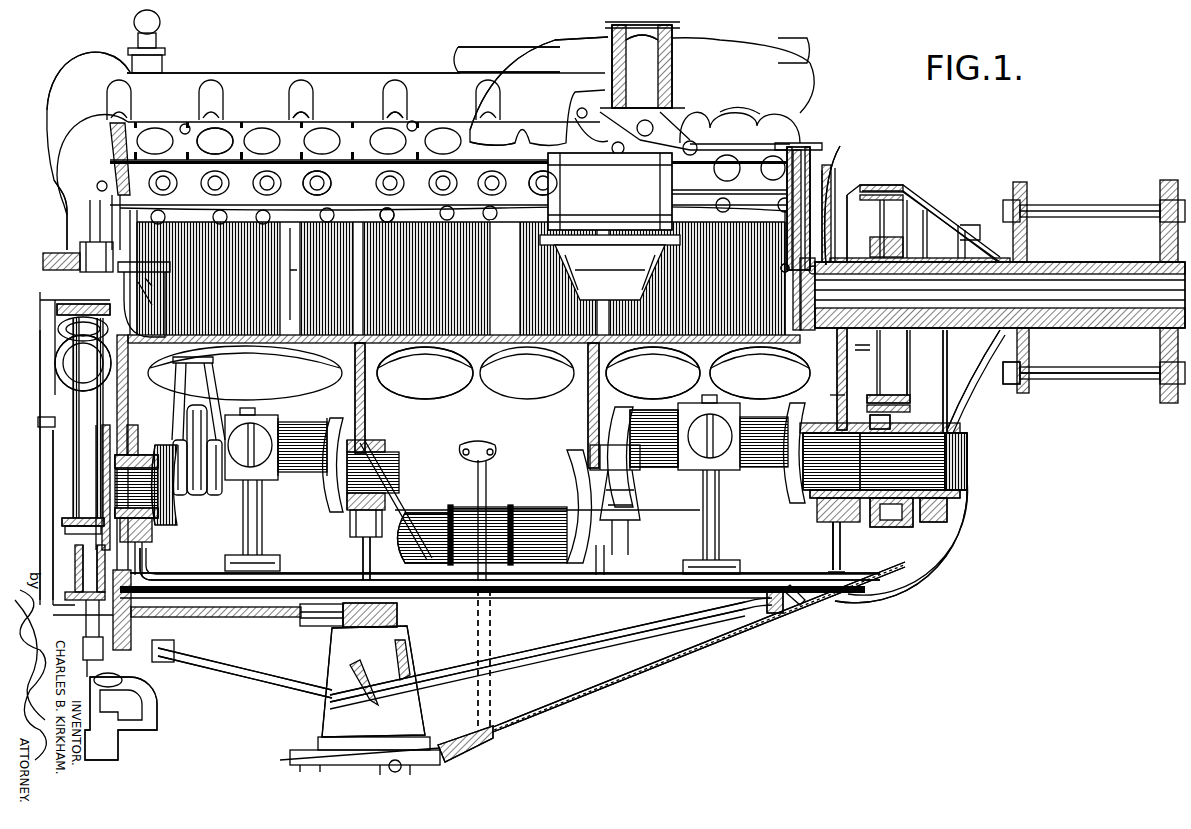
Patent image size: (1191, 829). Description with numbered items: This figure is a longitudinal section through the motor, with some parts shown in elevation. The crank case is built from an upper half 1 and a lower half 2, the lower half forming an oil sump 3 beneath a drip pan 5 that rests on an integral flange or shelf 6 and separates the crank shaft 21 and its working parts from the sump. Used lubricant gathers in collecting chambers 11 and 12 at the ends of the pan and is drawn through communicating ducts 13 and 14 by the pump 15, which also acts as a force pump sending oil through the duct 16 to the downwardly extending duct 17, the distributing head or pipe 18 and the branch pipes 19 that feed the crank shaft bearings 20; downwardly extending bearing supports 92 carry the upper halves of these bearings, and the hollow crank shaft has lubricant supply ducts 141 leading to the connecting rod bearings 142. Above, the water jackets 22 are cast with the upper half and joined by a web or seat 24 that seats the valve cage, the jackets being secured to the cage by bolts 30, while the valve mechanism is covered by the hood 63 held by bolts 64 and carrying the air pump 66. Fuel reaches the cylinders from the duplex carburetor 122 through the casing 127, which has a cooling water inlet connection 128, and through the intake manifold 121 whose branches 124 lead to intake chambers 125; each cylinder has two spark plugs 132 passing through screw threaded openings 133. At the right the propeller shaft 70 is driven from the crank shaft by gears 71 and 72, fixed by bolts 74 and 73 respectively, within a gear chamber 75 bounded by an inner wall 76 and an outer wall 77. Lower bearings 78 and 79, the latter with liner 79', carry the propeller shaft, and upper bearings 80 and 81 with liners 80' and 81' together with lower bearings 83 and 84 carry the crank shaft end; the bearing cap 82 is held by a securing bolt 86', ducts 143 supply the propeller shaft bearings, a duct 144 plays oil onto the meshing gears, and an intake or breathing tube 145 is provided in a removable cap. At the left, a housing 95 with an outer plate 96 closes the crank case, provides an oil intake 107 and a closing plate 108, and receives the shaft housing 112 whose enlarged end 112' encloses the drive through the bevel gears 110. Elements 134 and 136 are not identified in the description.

The upper half 1 is at (456, 340).
The lower half 2 is at (618, 670).
The oil sump 3 is at (343, 665).
The drip pan 5 is at (545, 594).
The flange or shelf 6 is at (830, 566).
The collecting chamber 11 is at (148, 700).
The collecting chamber 12 is at (815, 600).
The communicating duct 13 is at (236, 680).
The communicating duct 14 is at (552, 645).
The scavenging pump 15 is at (408, 672).
The duct 16 is at (480, 750).
The duct 17 is at (487, 470).
The distributing head or pipe 18 is at (518, 594).
The branch pipes 19 is at (832, 552).
The bearings 20 is at (348, 518).
The crank shaft 21 is at (650, 462).
The water jackets 22 is at (461, 278).
The web or seat 24 is at (532, 183).
The bolts 30 is at (388, 222).
The casing or hood 63 is at (352, 72).
The bolts 64 is at (396, 106).
The air pump 66 is at (152, 52).
The propeller shaft 70 is at (1080, 276).
The gear 71 is at (920, 370).
The gear 72 is at (905, 527).
The bolts 73 is at (878, 522).
The bolts 74 is at (884, 240).
The gear chamber 75 is at (1000, 356).
The inner wall 76 is at (830, 395).
The outer wall 77 is at (965, 400).
The lower bearing 78 is at (830, 343).
The lower bearing 79 is at (1005, 381).
The liner 79' is at (912, 278).
The upper bearing 80 is at (826, 379).
The liner 80' is at (804, 464).
The upper bearing 81 is at (944, 441).
The liner 81' is at (993, 468).
The bearing cap 82 is at (935, 212).
The lower bearing 83 is at (818, 500).
The lower bearing 84 is at (948, 505).
The securing bolt 86' is at (758, 249).
The bearing supports 92 is at (580, 406).
The housing 95 is at (58, 528).
The outer plate or main body 96 is at (52, 476).
The intake 107 is at (152, 290).
The plate 108 is at (52, 344).
The gears 110 is at (56, 316).
The shaft housing 112 is at (51, 215).
The enlarged upper end 112' is at (88, 110).
The intake manifold 121 is at (572, 52).
The duplex carburetor 122 is at (610, 191).
The branches 124 is at (738, 118).
The intake chambers 125 is at (225, 142).
The casing 127 is at (625, 72).
The inlet connection 128 is at (642, 55).
The spark plugs 132 is at (722, 153).
The screw threaded openings 133 is at (318, 181).
The pipe 134 is at (488, 52).
The valve cap 136 is at (307, 113).
The lubricant supply ducts 141 is at (397, 478).
The connecting rod bearings 142 is at (200, 384).
The communicating ducts 143 is at (1043, 364).
The duct 144 is at (960, 392).
The intake or breathing tube 145 is at (822, 170).